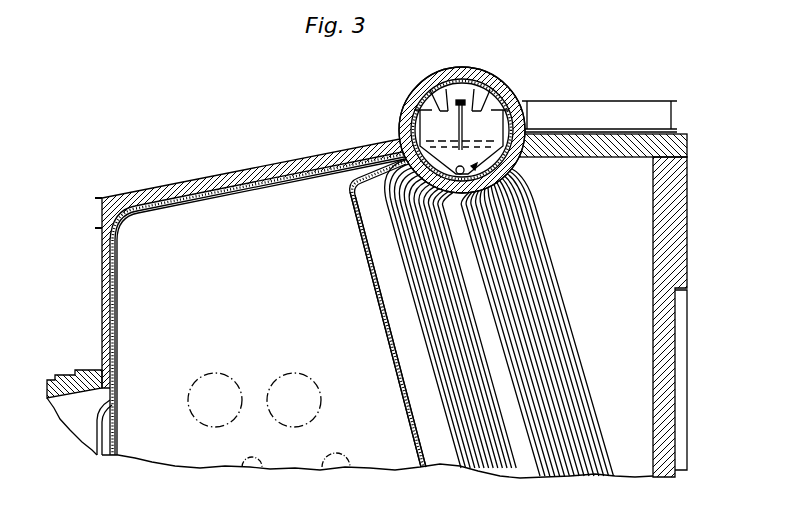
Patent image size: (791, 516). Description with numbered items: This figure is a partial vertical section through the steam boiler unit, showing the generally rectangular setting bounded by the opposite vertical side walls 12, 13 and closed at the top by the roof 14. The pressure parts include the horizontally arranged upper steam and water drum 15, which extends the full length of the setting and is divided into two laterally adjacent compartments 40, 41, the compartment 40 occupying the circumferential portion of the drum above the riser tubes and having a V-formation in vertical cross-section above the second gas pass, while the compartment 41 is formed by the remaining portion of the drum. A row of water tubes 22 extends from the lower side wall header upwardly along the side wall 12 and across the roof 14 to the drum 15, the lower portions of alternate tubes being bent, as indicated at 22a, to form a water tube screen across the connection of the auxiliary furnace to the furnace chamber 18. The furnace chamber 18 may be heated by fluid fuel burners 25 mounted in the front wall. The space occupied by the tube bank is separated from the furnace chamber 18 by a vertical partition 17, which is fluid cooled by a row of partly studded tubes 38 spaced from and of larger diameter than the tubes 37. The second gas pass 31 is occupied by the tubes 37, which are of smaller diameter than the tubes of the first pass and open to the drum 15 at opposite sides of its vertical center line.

The side wall 12 is at (102, 292).
The side wall 13 is at (668, 386).
The roof 14 is at (258, 168).
The upper steam and water drum 15 is at (514, 156).
The vertical partition 17 is at (405, 393).
The furnace chamber 18 is at (263, 340).
The water tubes 22 is at (118, 343).
The bent lower tube portions 22a is at (105, 440).
The fluid fuel burners 25 is at (318, 467).
The second gas pass 31 is at (489, 326).
The tubes 37 is at (560, 343).
The partly studded tubes 38 is at (382, 323).
The compartment 40 is at (400, 126).
The compartment 41 is at (461, 137).